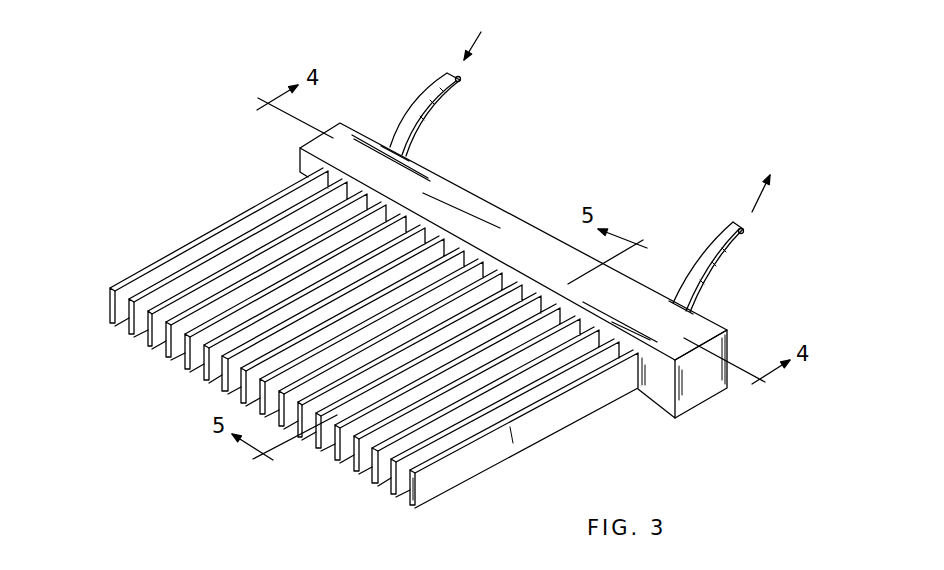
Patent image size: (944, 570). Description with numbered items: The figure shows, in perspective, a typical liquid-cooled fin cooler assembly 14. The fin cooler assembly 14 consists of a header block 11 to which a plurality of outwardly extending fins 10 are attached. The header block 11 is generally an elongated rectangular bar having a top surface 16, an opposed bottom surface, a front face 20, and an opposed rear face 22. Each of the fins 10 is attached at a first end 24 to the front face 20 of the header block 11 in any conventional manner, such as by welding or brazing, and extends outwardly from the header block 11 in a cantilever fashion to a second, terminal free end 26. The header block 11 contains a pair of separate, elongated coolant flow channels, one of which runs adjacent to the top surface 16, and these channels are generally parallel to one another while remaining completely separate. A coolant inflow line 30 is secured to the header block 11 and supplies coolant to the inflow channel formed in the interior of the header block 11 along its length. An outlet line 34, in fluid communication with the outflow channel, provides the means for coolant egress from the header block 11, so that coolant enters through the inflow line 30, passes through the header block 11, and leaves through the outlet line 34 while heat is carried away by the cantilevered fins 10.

The fins 10 is at (358, 491).
The header block 11 is at (499, 182).
The fin cooler assembly 14 is at (198, 202).
The top surface 16 is at (430, 180).
The front face 20 is at (643, 393).
The rear face 22 is at (728, 342).
The first end 24 is at (655, 357).
The terminal free end 26 is at (145, 347).
The coolant inflow line 30 is at (450, 104).
The outlet line 34 is at (745, 249).